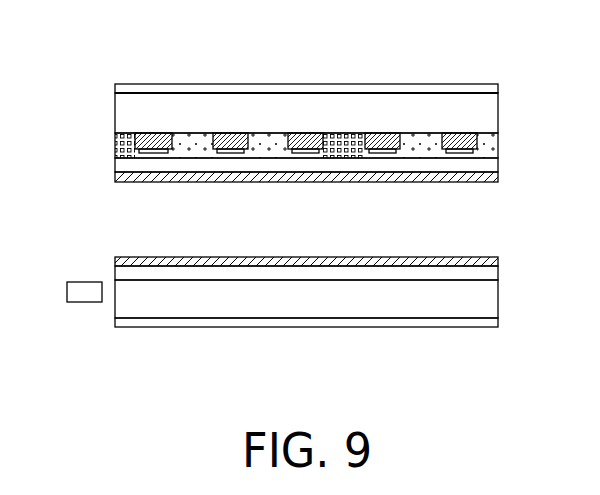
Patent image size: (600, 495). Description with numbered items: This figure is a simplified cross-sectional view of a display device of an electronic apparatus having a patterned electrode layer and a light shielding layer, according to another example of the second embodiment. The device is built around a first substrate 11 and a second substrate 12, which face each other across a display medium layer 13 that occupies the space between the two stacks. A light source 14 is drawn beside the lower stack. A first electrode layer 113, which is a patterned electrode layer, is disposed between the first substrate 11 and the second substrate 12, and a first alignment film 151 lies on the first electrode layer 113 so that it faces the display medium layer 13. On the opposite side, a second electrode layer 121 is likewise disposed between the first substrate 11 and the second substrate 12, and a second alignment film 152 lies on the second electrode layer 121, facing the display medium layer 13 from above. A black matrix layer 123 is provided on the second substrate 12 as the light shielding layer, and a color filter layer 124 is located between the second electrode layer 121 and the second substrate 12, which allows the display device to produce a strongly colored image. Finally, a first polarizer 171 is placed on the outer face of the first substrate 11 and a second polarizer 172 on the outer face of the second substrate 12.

The first substrate 11 is at (484, 300).
The second substrate 12 is at (483, 113).
The display medium layer 13 is at (503, 181).
The light source 14 is at (75, 293).
The first electrode layer 113 is at (450, 272).
The second electrode layer 121 is at (483, 165).
The black matrix layer 123 is at (383, 133).
The color filter layer 124 is at (430, 134).
The first alignment film 151 is at (497, 262).
The second alignment film 152 is at (497, 177).
The first polarizer 171 is at (420, 323).
The second polarizer 172 is at (478, 87).